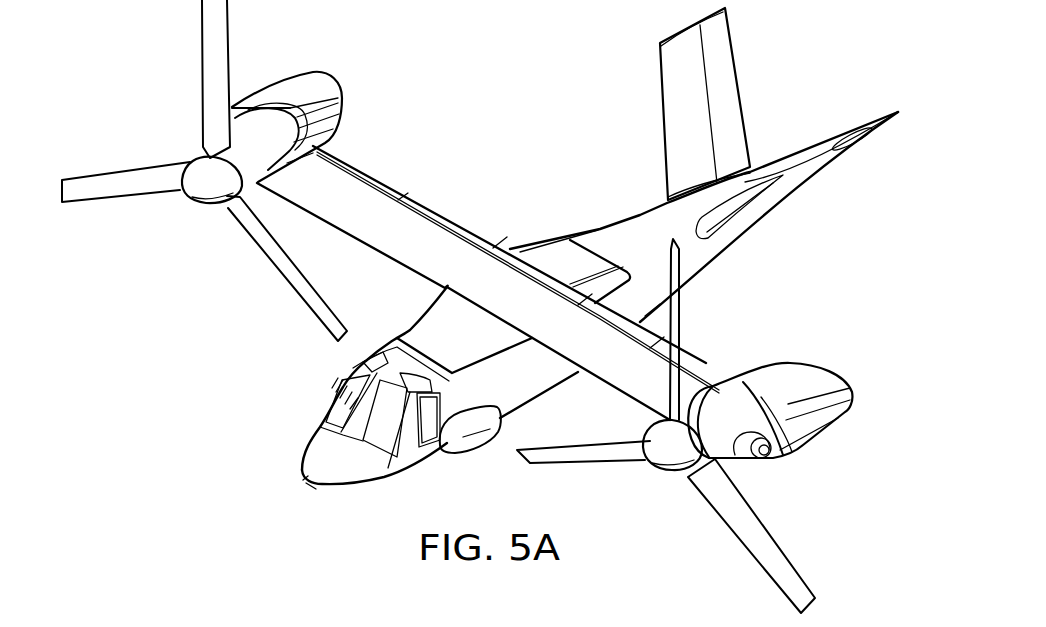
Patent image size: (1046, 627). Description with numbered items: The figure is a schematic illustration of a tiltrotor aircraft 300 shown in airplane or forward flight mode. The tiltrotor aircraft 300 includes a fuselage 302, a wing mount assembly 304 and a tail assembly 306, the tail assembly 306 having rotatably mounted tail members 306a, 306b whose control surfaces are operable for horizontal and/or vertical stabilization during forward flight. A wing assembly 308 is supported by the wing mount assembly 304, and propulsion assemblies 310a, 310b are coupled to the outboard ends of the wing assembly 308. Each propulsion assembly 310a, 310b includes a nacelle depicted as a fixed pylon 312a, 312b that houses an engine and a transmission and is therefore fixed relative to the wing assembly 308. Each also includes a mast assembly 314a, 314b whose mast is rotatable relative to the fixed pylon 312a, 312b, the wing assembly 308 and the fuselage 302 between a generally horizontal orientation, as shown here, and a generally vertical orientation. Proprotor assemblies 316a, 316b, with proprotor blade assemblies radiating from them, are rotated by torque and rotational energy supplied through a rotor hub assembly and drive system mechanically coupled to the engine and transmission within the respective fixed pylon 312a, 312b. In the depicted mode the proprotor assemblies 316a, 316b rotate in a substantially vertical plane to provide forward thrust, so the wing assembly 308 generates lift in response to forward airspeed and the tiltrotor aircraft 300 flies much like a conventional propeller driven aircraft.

The tiltrotor aircraft 300 is at (548, 116).
The fuselage 302 is at (353, 490).
The wing mount assembly 304 is at (557, 252).
The tail assembly 306 is at (737, 62).
The tail member 306a is at (867, 135).
The tail member 306b is at (705, 104).
The wing assembly 308 is at (437, 260).
The propulsion assembly 310a is at (799, 368).
The propulsion assembly 310b is at (309, 78).
The fixed pylon 312a is at (827, 437).
The fixed pylon 312b is at (323, 90).
The mast assembly 314a is at (727, 397).
The mast assembly 314b is at (263, 148).
The proprotor assembly 316a is at (653, 475).
The proprotor assembly 316b is at (182, 199).